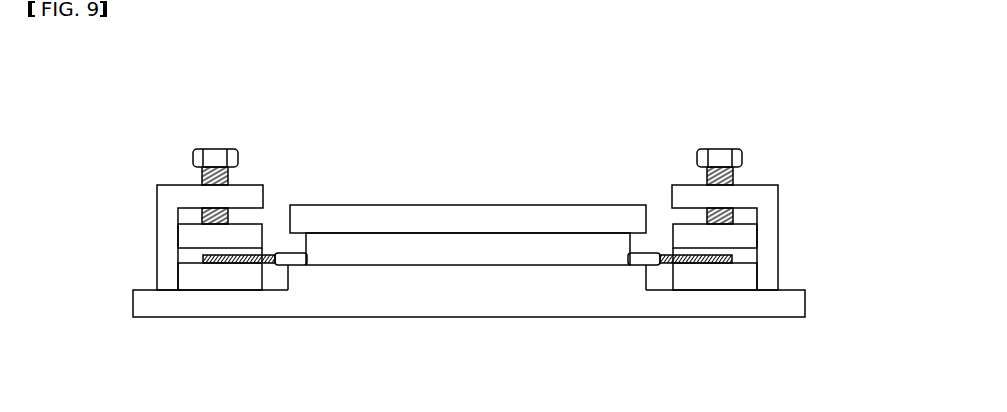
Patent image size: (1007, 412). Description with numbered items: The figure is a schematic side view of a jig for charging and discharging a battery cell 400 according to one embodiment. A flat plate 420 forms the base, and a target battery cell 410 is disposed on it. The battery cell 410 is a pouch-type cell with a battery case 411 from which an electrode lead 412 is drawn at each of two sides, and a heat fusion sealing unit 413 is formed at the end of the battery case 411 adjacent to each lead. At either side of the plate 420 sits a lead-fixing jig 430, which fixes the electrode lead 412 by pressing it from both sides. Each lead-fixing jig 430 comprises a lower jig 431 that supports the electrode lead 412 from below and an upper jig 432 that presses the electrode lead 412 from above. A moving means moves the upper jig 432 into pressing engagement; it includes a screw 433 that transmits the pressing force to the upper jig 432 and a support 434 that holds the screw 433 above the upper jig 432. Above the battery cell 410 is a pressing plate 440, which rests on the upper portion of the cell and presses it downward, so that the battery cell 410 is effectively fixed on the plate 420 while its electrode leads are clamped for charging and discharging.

The jig for charging and discharging a battery cell 400 is at (113, 97).
The battery cell 410 is at (454, 317).
The battery case 411 is at (338, 258).
The electrode lead 412 is at (250, 262).
The heat fusion sealing unit 413 is at (285, 265).
The plate 420 is at (470, 317).
The lead-fixing jig 430 is at (772, 190).
The lower jig 431 is at (746, 274).
The upper jig 432 is at (745, 237).
The screw 433 is at (713, 149).
The support 434 is at (758, 185).
The pressing plate 440 is at (490, 205).